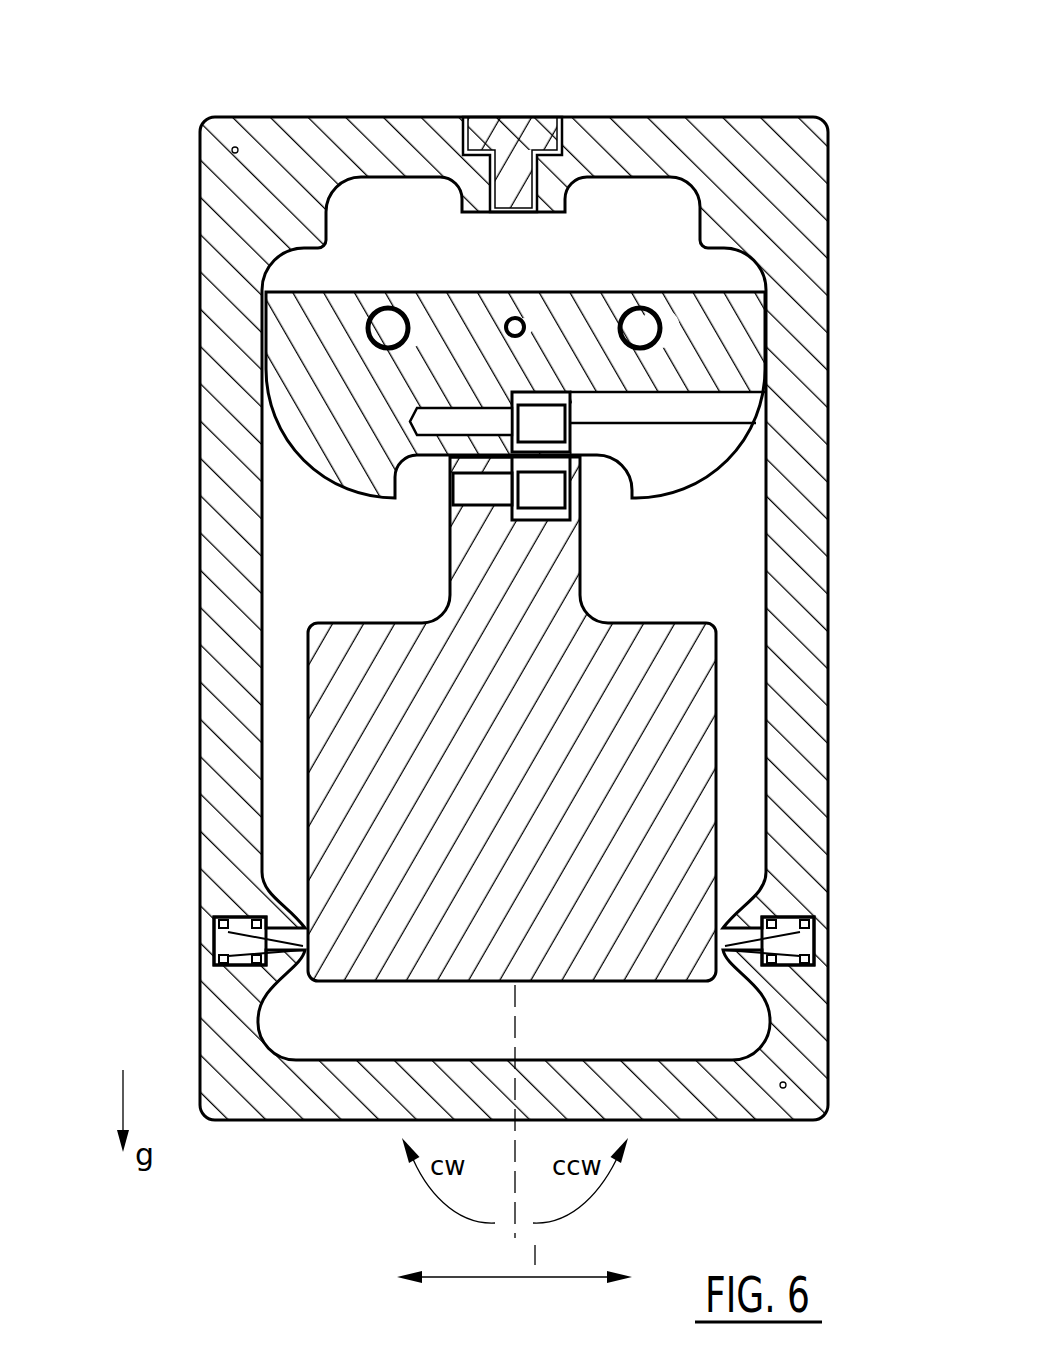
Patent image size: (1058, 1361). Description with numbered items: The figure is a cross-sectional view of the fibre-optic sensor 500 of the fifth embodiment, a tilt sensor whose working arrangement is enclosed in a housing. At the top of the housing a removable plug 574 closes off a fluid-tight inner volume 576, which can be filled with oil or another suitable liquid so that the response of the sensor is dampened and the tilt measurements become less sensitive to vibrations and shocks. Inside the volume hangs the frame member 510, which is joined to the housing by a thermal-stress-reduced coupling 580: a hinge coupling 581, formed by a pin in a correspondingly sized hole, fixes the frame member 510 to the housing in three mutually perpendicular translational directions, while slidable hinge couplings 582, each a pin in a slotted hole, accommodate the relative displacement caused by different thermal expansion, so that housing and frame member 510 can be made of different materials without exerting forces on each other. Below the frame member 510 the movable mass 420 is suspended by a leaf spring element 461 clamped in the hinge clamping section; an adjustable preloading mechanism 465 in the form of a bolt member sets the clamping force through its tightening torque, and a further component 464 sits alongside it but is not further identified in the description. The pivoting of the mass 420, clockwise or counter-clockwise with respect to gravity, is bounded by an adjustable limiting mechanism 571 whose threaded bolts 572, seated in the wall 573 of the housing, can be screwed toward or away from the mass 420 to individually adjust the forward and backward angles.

The fibre-optic sensor 500 is at (504, 560).
The wall of the housing 573 is at (805, 785).
The plug 574 is at (530, 140).
The fluid-tight inner volume 576 is at (655, 215).
The thermal-stress-reduced coupling 580 is at (418, 361).
The frame member 510 is at (323, 420).
The hinge coupling 581 is at (520, 330).
The slidable hinge coupling 582 is at (387, 330).
The bearing housing 464 is at (560, 393).
The adjustable preloading mechanism 465 is at (560, 417).
The leaf spring element 461 is at (513, 453).
The movable mass 420 is at (335, 798).
The adjustable limiting mechanism 571 is at (504, 937).
The bolts 572 is at (800, 940).